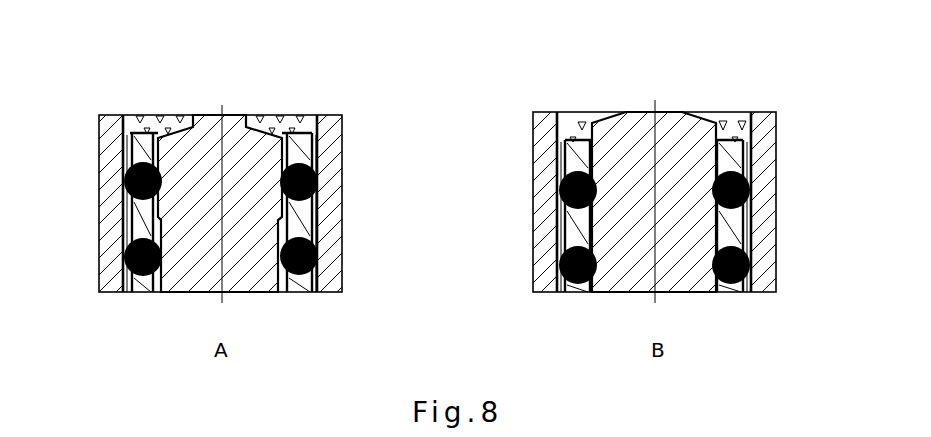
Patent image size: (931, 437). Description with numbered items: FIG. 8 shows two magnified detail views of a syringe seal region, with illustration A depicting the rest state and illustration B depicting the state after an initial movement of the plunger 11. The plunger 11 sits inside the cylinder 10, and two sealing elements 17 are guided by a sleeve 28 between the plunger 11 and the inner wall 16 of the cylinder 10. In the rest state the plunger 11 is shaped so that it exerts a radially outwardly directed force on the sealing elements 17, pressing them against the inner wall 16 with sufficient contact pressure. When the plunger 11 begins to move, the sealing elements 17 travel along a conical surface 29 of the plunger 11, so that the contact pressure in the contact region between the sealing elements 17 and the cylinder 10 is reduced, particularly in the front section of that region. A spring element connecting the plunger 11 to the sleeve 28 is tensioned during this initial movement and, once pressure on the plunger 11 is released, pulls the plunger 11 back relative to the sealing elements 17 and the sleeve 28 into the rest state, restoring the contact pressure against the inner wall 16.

The cylinder 10 is at (113, 152).
The plunger 11 is at (232, 120).
The inner wall 16 is at (130, 133).
The sealing elements 17 is at (316, 181).
The sleeve 28 is at (318, 120).
The conical surface 29 is at (153, 220).